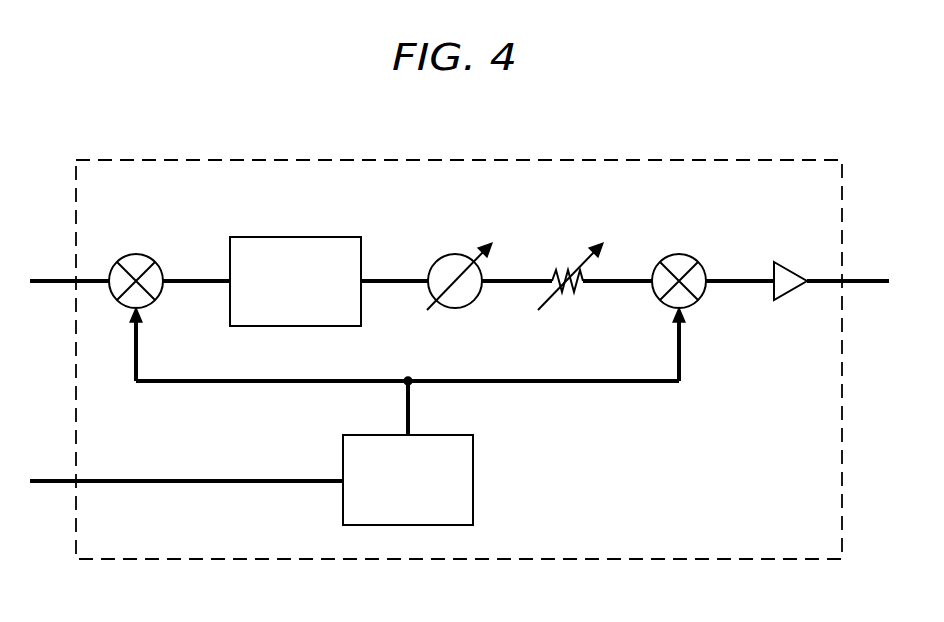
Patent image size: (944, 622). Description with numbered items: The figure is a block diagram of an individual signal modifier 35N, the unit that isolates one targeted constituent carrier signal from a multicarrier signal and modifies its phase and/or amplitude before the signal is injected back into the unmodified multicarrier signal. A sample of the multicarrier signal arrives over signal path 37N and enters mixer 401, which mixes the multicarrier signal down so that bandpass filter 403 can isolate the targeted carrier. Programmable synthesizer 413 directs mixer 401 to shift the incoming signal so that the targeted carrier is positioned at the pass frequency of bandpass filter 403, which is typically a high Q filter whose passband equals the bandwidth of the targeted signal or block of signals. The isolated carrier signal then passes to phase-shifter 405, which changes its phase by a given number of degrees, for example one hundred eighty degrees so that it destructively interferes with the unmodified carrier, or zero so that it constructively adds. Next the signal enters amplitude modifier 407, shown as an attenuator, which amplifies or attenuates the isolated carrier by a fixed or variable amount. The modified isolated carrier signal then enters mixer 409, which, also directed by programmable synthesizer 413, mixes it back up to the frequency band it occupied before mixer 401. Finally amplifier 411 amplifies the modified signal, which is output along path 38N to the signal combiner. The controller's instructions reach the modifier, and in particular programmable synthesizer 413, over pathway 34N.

The individual signal modifier 35N is at (690, 159).
The signal path 37N is at (50, 279).
The signal pathway 38N is at (868, 279).
The pathway 34N is at (50, 479).
The mixer 401 is at (152, 300).
The bandpass filter 403 is at (297, 236).
The phase-shifter 405 is at (476, 300).
The amplitude modifier 407 is at (570, 295).
The mixer 409 is at (696, 300).
The amplifier 411 is at (790, 262).
The programmable synthesizer 413 is at (474, 478).